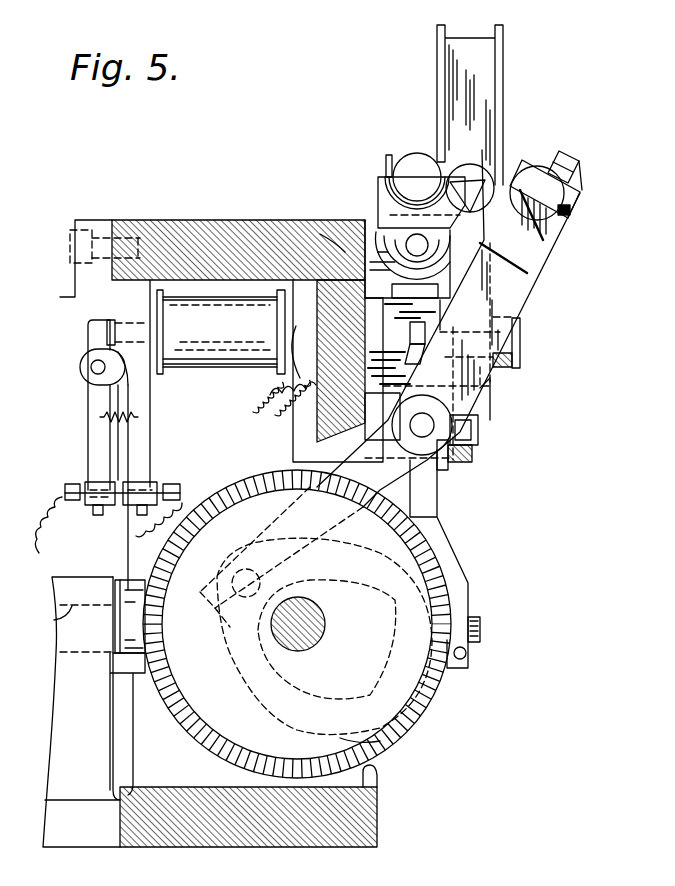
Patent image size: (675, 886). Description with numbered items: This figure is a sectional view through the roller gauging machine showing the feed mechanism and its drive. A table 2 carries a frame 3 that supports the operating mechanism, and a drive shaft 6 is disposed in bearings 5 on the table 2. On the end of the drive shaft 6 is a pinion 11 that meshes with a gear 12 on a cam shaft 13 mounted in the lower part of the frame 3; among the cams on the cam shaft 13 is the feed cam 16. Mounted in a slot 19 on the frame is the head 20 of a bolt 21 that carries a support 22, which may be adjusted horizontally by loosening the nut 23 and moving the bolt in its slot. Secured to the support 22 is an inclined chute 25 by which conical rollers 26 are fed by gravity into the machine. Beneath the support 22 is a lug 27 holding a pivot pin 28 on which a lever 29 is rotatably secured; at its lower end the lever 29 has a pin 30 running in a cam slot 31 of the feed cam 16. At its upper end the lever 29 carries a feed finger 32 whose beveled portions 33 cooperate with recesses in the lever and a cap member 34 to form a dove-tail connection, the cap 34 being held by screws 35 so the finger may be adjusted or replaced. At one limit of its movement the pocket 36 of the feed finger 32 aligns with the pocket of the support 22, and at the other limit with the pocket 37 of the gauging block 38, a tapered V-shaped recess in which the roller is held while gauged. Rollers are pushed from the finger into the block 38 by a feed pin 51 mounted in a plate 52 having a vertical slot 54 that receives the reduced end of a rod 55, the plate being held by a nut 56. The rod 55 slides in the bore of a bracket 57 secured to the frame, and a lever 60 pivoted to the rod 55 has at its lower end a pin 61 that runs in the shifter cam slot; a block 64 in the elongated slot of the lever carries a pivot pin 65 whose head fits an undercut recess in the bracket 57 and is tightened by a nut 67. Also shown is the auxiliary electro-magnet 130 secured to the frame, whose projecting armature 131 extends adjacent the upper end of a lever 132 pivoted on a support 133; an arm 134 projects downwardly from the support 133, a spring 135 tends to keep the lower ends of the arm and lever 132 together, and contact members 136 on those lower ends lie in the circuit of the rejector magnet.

The table 2 is at (360, 821).
The frame 3 is at (221, 353).
The bearings 5 is at (81, 712).
The drive shaft 6 is at (54, 620).
The pinion 11 is at (148, 684).
The gear 12 is at (420, 714).
The cam shaft 13 is at (312, 632).
The feed cam 16 is at (372, 742).
The slot 19 is at (410, 341).
The head of bolt 20 is at (401, 347).
The bolt 21 is at (515, 341).
The support 22 is at (492, 393).
The nut 23 is at (512, 371).
The chute 25 is at (492, 81).
The conical rollers 26 is at (412, 166).
The lug 27 is at (478, 504).
The pivot pin 28 is at (424, 426).
The lever 29 is at (522, 256).
The pin 30 is at (238, 594).
The cam slot 31 is at (265, 686).
The feed finger 32 is at (548, 172).
The beveled portions 33 is at (545, 232).
The cap member 34 is at (567, 201).
The screws 35 is at (578, 171).
The pocket 36 is at (388, 159).
The pocket 37 is at (395, 179).
The gauging block 38 is at (378, 201).
The feed pin 51 is at (337, 338).
The plate 52 is at (295, 242).
The vertical slot 54 is at (245, 222).
The rod 55 is at (335, 237).
The nut 56 is at (380, 217).
The bracket 57 is at (351, 318).
The lever 60 is at (445, 560).
The pin 61 is at (480, 629).
The block 64 is at (442, 463).
The pivot pin 65 is at (465, 456).
The nut 67 is at (455, 471).
The electro-magnet 130 is at (195, 352).
The armature 131 is at (95, 323).
The lever 132 is at (98, 441).
The support 133 is at (92, 369).
The arm 134 is at (140, 463).
The spring 135 is at (115, 406).
The contact members 136 is at (140, 506).